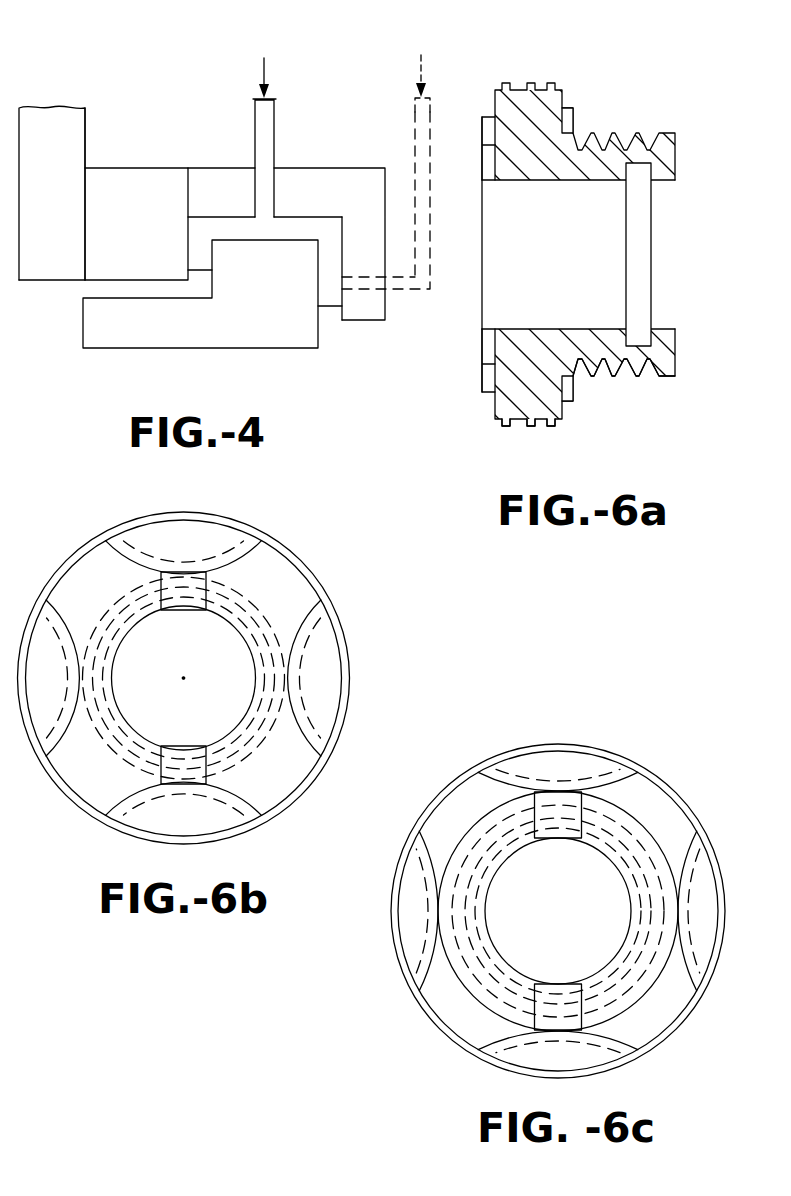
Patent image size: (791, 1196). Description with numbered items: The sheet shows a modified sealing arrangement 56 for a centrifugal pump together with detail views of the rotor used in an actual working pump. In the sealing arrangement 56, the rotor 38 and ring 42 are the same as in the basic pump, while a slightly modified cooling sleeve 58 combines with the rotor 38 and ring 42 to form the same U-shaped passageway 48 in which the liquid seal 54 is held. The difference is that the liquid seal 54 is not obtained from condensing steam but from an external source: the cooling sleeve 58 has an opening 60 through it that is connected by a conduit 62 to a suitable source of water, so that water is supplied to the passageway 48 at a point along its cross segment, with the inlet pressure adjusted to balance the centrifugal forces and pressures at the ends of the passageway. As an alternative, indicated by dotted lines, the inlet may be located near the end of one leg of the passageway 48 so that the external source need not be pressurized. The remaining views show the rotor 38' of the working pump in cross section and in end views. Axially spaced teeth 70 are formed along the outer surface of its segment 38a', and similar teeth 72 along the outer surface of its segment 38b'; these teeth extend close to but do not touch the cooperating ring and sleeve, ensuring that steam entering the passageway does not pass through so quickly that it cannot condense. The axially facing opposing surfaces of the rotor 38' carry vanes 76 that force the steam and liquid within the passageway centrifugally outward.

In FIG. 4, the sealing arrangement 56 is at (172, 58).
In FIG. 4, the ring 42 is at (133, 183).
In FIG. 4, the opening 60 is at (255, 183).
In FIG. 4, the conduit 62 is at (252, 118).
In FIG. 4, the cooling sleeve 58 is at (291, 175).
In FIG. 4, the liquid seal 54 is at (327, 228).
In FIG. 4, the U-shaped passageway 48 is at (329, 313).
In FIG. 4, the rotor 38 is at (200, 312).
In FIG. 6A, the rotor 38' is at (450, 263).
In FIG. 6A, the rotor segment 38a' is at (663, 292).
In FIG. 6A, the rotor segment 38b' is at (460, 254).
In FIG. 6A, the teeth 70 is at (602, 366).
In FIG. 6A, the teeth 72 is at (552, 425).
In FIG. 6B, the vanes 76 is at (190, 695).
In FIG. 6C, the vanes 76 is at (532, 916).